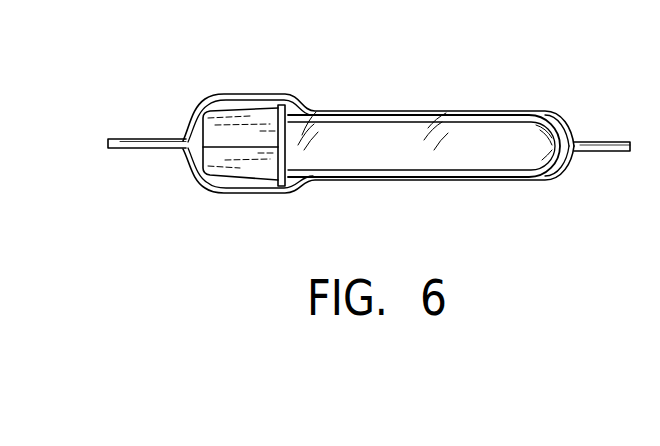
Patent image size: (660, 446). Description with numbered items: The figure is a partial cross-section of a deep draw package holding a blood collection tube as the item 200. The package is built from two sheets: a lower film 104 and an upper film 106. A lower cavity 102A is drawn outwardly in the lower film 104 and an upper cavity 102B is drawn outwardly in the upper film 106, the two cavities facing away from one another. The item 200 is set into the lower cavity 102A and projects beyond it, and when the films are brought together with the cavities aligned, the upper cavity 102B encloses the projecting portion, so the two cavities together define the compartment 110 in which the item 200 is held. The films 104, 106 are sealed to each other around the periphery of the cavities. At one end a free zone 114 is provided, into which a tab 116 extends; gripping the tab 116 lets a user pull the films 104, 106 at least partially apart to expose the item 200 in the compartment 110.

The lower cavity 102A is at (255, 190).
The upper cavity 102B is at (251, 99).
The item 200 is at (358, 140).
The compartment 110 is at (195, 150).
The free zone 114 is at (108, 145).
The tab 116 is at (152, 139).
The lower film 104 is at (598, 152).
The upper film 106 is at (597, 140).